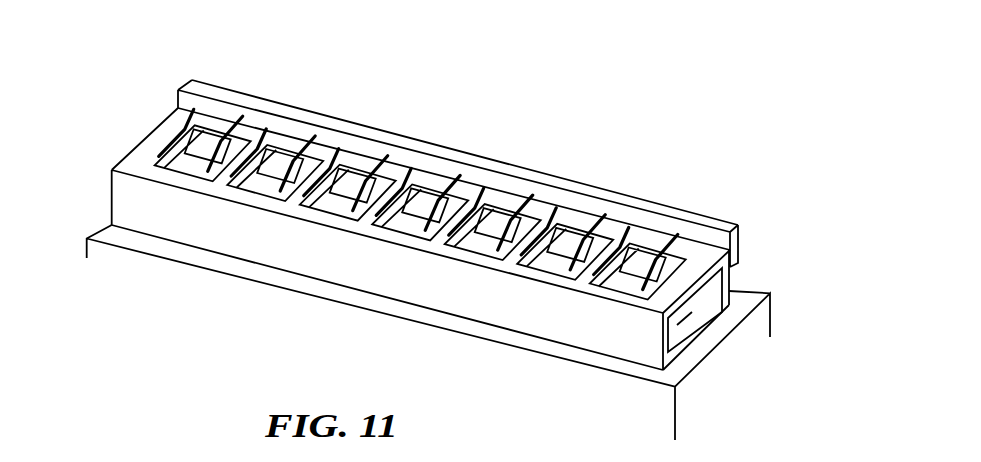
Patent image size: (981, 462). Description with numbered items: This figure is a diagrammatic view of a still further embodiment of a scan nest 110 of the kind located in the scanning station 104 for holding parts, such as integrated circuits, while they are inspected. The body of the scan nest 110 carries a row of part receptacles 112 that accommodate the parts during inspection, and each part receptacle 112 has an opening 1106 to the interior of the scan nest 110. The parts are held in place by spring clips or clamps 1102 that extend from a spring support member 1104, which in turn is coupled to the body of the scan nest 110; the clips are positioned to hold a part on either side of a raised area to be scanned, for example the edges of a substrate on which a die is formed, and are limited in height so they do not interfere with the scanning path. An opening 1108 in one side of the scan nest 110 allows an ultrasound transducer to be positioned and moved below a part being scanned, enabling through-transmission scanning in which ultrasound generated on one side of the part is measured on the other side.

The scanning station 104 is at (716, 347).
The scan nest 110 is at (332, 278).
The receptacle 112 is at (440, 187).
The spring clip 1102 is at (640, 230).
The spring support member 1104 is at (718, 227).
The opening 1106 is at (226, 164).
The opening 1108 is at (662, 352).